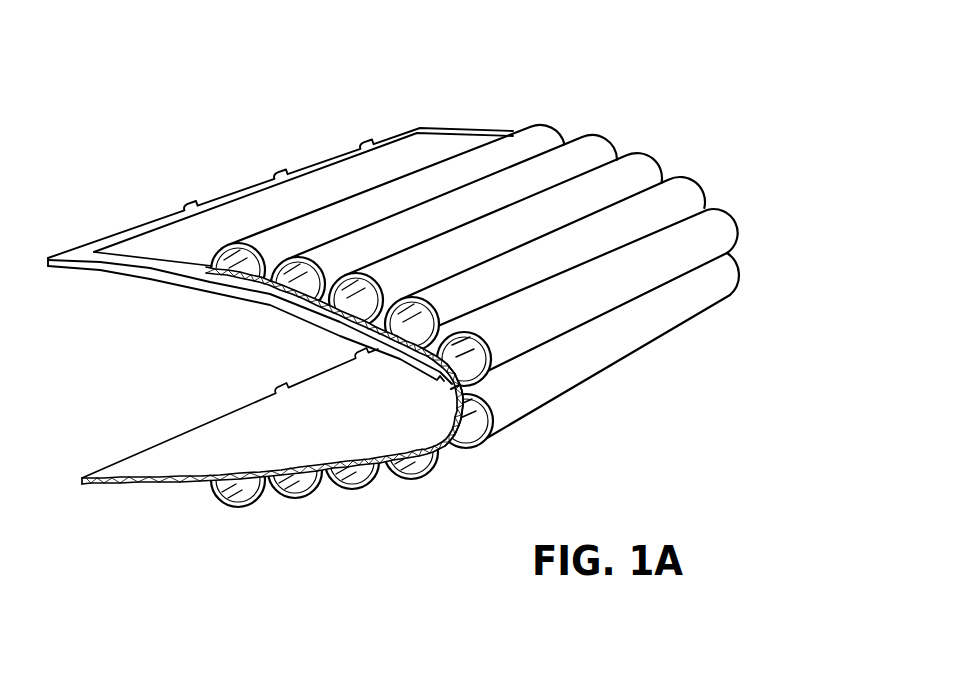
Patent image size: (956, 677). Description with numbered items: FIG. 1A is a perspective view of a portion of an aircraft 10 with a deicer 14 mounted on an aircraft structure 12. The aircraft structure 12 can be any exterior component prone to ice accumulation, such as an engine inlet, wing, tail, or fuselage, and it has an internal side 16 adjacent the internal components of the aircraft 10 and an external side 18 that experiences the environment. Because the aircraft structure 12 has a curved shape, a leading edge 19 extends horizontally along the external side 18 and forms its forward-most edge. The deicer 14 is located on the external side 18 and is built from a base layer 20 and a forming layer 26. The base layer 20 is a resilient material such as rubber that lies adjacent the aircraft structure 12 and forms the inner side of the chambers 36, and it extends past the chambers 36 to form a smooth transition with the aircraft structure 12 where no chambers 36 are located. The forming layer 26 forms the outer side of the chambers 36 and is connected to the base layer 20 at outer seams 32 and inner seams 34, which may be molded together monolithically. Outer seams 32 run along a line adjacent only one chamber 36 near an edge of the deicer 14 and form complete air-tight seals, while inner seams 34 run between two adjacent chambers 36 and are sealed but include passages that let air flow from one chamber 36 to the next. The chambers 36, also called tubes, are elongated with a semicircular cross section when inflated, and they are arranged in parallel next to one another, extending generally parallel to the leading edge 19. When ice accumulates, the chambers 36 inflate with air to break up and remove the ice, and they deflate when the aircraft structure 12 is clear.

The aircraft 10 is at (88, 133).
The aircraft structure 12 is at (306, 136).
The deicer 14 is at (519, 160).
The internal side 16 is at (199, 441).
The external side 18 is at (671, 159).
The leading edge 19 is at (729, 251).
The base layer 20 is at (436, 410).
The forming layer 26 is at (483, 448).
The outer seams 32 is at (210, 268).
The inner seams 34 is at (317, 297).
The chambers 36 is at (297, 282).